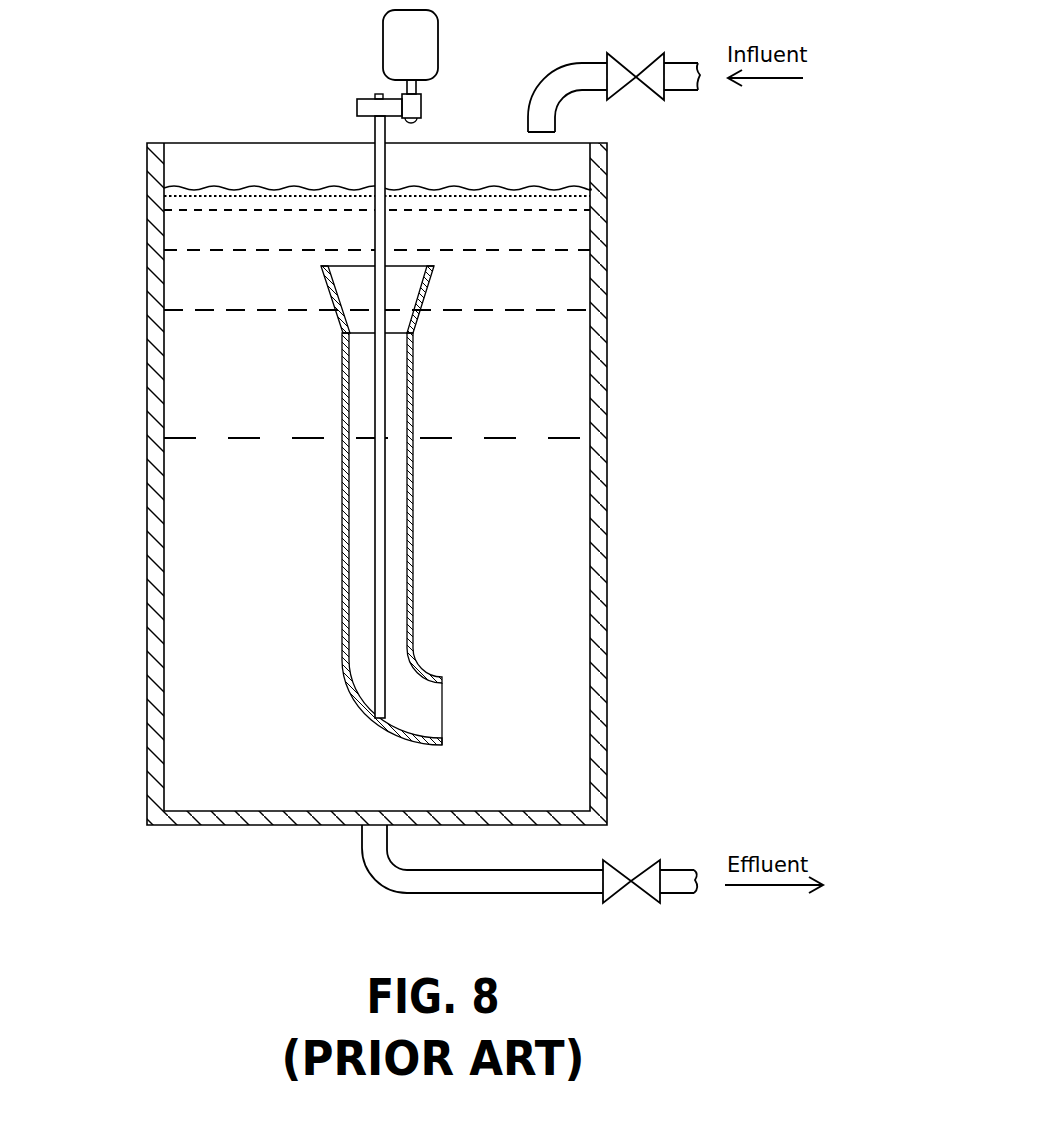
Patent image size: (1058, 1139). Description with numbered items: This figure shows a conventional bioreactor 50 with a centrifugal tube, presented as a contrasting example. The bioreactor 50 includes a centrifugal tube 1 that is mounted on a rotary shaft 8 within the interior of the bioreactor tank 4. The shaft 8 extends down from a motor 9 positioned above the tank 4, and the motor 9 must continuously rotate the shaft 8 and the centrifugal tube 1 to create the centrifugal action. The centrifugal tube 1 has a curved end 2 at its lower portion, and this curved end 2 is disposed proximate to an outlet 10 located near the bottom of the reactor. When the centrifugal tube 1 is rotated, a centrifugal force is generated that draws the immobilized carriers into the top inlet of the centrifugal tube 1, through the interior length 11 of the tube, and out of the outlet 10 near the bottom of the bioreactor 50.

The centrifugal tube 1 is at (447, 510).
The curved end 2 is at (510, 670).
The bioreactor tank 4 is at (607, 531).
The rotary shaft 8 is at (385, 234).
The motor 9 is at (435, 33).
The outlet 10 is at (420, 727).
The interior length 11 is at (392, 640).
The bioreactor 50 is at (508, 396).